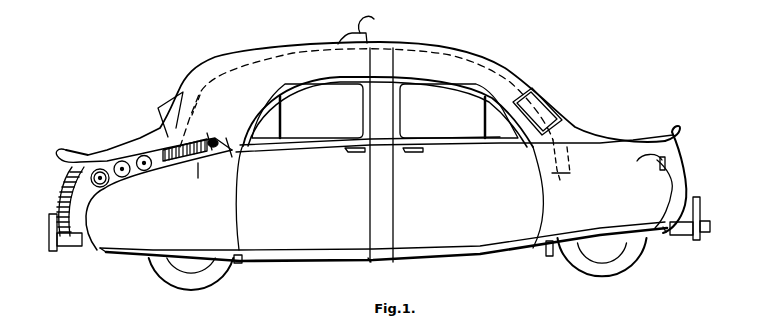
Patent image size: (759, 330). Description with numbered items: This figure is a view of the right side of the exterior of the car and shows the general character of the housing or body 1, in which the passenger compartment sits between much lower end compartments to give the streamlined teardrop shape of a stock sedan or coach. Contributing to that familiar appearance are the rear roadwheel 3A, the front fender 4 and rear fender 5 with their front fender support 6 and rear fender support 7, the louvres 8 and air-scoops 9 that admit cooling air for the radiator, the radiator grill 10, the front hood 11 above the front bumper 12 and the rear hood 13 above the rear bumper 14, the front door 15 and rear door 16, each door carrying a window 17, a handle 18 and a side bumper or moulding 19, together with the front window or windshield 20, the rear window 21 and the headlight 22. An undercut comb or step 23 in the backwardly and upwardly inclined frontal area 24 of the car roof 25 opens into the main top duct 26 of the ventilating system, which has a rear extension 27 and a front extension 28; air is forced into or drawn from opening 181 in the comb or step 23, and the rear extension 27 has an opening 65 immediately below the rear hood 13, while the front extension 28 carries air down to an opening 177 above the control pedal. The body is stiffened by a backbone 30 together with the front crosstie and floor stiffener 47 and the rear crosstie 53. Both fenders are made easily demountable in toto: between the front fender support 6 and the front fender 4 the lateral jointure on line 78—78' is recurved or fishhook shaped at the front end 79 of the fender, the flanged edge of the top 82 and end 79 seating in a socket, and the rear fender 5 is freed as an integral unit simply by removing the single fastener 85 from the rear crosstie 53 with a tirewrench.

The housing or body 1 is at (369, 151).
The right rear roadwheel 3A is at (153, 268).
The front fender 4 is at (604, 208).
The rear fender 5 is at (159, 200).
The front fender support 6 is at (608, 162).
The rear fender support 7 is at (247, 290).
The louvres 8 is at (133, 175).
The air-scoops 9 is at (108, 185).
The radiator grill 10 is at (60, 204).
The front hood 11 is at (610, 127).
The front bumper 12 is at (710, 223).
The rear hood 13 is at (110, 147).
The rear bumper 14 is at (49, 234).
The front door 15 is at (424, 155).
The rear door 16 is at (333, 155).
The window 17 is at (385, 111).
The handle 18 is at (412, 153).
The side bumper or moulding 19 is at (371, 261).
The front window or windshield 20 is at (548, 110).
The rear window 21 is at (158, 115).
The headlight 22 is at (670, 165).
The undercut comb or step 23 is at (374, 20).
The frontal area of car roof 24 is at (442, 43).
The car roof 25 is at (270, 50).
The main top duct 26 is at (296, 70).
The rear extension 27 is at (203, 97).
The front extension 28 is at (570, 155).
The backbone 30 is at (290, 263).
The front crosstie and floor stiffener 47 is at (553, 262).
The rear crosstie 53 is at (247, 262).
The opening 65 is at (158, 176).
The line of jointure 78 is at (382, 162).
The line of jointure 78' is at (378, 253).
The front end of fender 79 is at (90, 239).
The top of fender 82 is at (198, 178).
The single fastener 85 is at (237, 264).
The opening 177 is at (556, 170).
The opening 181 is at (352, 38).